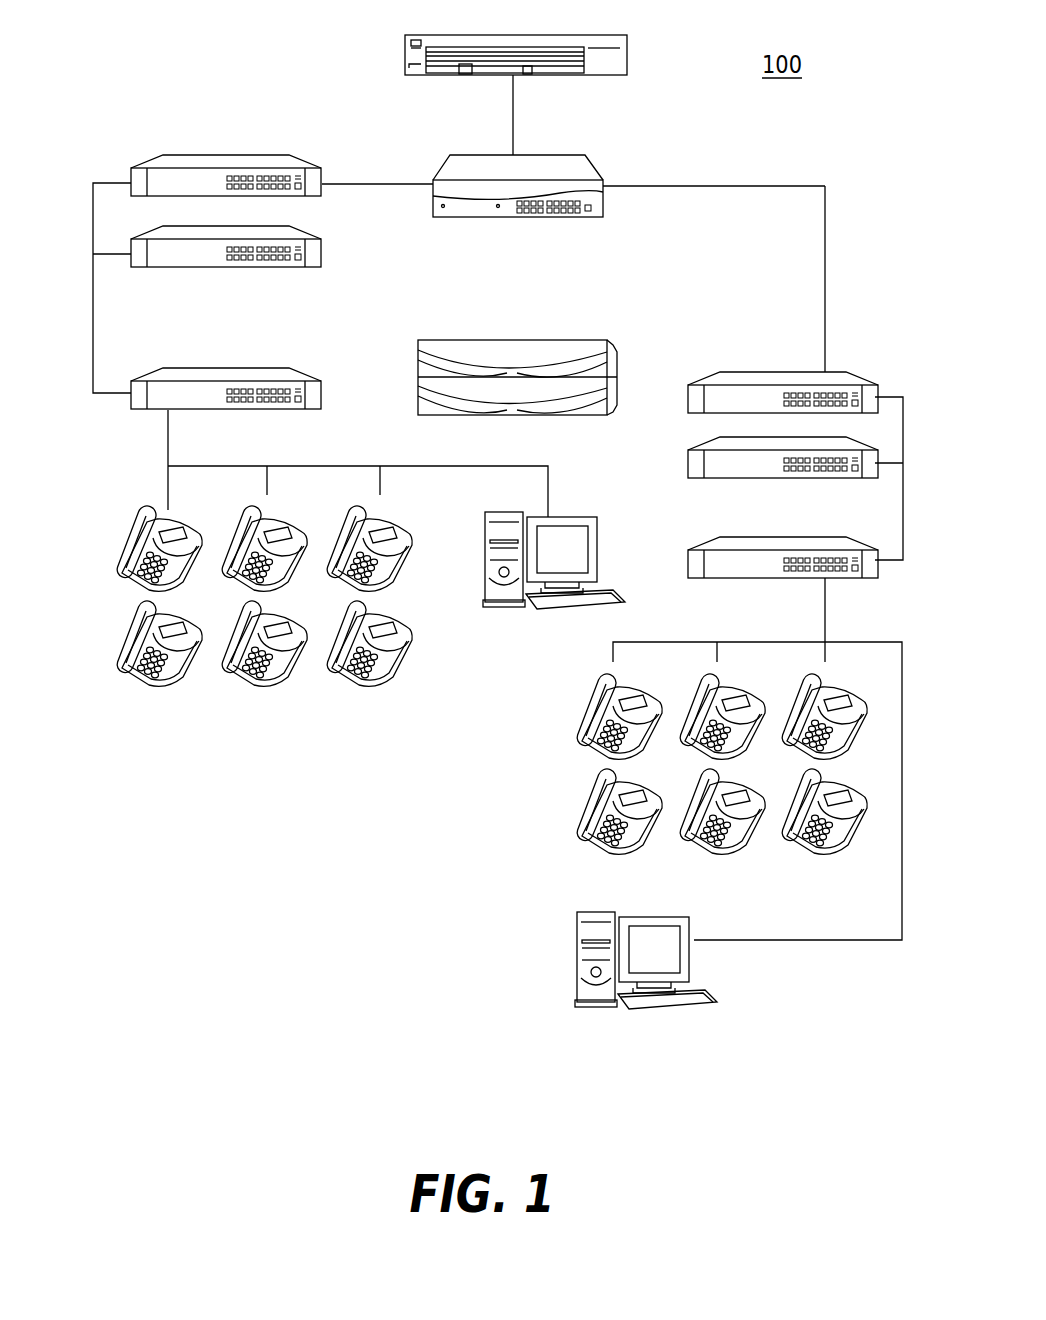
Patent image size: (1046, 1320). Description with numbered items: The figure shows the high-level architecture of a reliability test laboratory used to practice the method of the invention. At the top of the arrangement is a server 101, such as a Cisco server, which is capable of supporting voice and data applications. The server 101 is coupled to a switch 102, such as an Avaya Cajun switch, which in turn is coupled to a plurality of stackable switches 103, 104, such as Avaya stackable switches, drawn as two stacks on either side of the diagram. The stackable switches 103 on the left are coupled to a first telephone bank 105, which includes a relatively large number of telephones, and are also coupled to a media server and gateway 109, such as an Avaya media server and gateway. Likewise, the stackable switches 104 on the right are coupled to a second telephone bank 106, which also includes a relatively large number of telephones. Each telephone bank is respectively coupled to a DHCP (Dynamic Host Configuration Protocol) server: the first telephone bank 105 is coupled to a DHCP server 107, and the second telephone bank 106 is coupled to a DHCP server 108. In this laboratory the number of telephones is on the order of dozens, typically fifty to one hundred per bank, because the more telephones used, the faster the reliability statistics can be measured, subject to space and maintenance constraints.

The server 101 is at (405, 58).
The switch 102 is at (597, 170).
The stackable switches 103 is at (202, 155).
The stackable switches 104 is at (773, 372).
The first telephone bank 105 is at (258, 690).
The second telephone bank 106 is at (578, 818).
The DHCP server 107 is at (540, 612).
The DHCP server 108 is at (577, 997).
The media server and gateway 109 is at (506, 340).